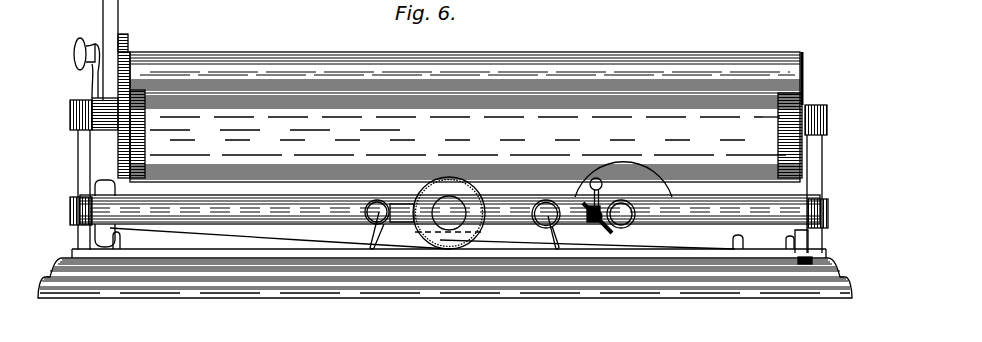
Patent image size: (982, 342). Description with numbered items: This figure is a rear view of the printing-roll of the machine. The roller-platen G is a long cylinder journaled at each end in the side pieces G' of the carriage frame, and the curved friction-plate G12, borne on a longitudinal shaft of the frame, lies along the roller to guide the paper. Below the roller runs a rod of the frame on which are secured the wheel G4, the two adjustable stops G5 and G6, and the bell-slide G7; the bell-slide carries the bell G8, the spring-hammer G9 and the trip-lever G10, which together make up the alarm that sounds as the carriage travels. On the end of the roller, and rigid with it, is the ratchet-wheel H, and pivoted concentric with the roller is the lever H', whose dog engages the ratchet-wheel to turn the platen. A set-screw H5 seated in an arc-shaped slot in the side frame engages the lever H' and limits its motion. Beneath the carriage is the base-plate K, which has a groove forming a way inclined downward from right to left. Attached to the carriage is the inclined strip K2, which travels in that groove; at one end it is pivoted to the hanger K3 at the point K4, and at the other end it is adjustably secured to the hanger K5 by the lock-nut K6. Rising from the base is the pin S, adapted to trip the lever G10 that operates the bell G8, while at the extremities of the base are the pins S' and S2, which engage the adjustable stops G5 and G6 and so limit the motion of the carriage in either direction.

The roller-platen G is at (448, 106).
The curved friction-plate G12 is at (434, 138).
The side pieces of the frame G' is at (446, 191).
The wheel G4 is at (437, 213).
The adjustable stop G5 is at (378, 214).
The adjustable stop G6 is at (547, 217).
The bell-slide G7 is at (621, 214).
The bell G8 is at (623, 179).
The spring-hammer G9 is at (603, 194).
The trip-lever G10 is at (597, 226).
The ratchet-wheel H is at (147, 40).
The lever H' is at (124, 65).
The set-screw H5 is at (72, 68).
The base-plate K is at (192, 272).
The inclined strip K2 is at (282, 229).
The hanger K3 is at (810, 241).
The pivot point K4 is at (801, 265).
The hanger K5 is at (92, 238).
The lock-nut K6 is at (117, 189).
The pin S is at (744, 244).
The pin S' is at (123, 241).
The pin S2 is at (782, 244).